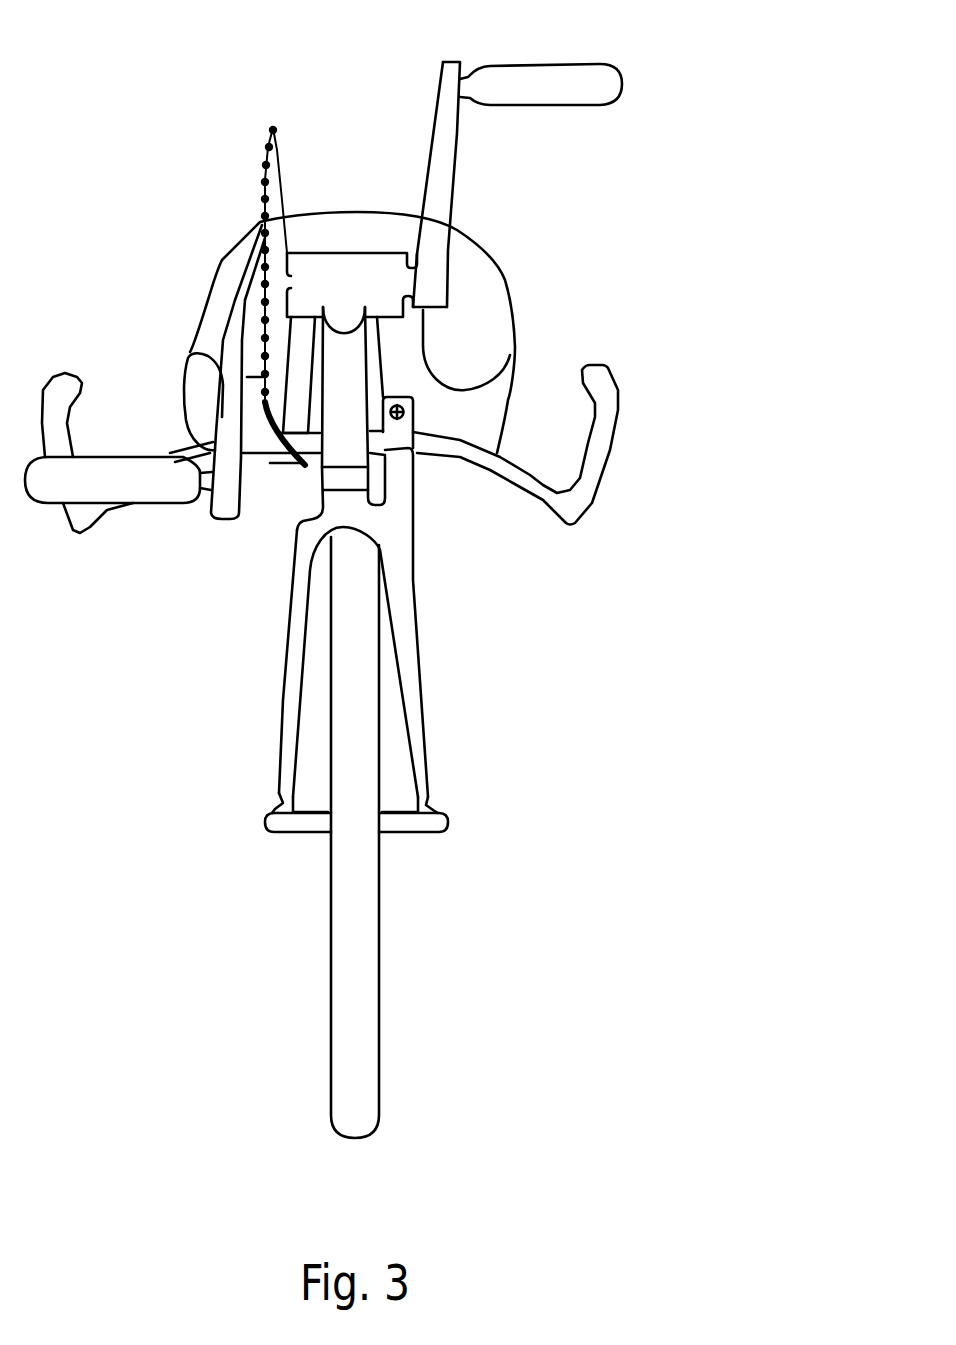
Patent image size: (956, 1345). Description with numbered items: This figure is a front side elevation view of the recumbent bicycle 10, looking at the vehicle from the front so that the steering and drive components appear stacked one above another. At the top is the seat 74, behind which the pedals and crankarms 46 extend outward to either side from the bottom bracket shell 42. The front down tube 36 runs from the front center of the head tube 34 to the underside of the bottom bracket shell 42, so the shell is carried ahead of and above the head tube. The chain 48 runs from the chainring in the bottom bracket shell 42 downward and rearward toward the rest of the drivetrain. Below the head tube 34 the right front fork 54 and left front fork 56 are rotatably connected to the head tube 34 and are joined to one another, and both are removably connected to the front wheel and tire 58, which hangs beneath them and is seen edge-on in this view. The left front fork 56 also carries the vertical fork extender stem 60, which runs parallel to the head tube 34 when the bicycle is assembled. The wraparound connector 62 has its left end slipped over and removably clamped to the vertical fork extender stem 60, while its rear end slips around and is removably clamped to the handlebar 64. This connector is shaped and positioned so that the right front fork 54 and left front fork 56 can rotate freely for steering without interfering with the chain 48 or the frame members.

The recumbent bicycle 10 is at (353, 571).
The head tube 34 is at (317, 487).
The front down tube 36 is at (380, 353).
The bottom bracket shell 42 is at (340, 247).
The pedals and crankarms 46 is at (540, 62).
The chain 48 is at (291, 467).
The right front fork 54 is at (282, 653).
The left front fork 56 is at (423, 648).
The front wheel and tire 58 is at (385, 902).
The vertical fork extender stem 60 is at (420, 483).
The wraparound connector 62 is at (418, 417).
The handlebar 64 is at (617, 432).
The seat 74 is at (505, 277).